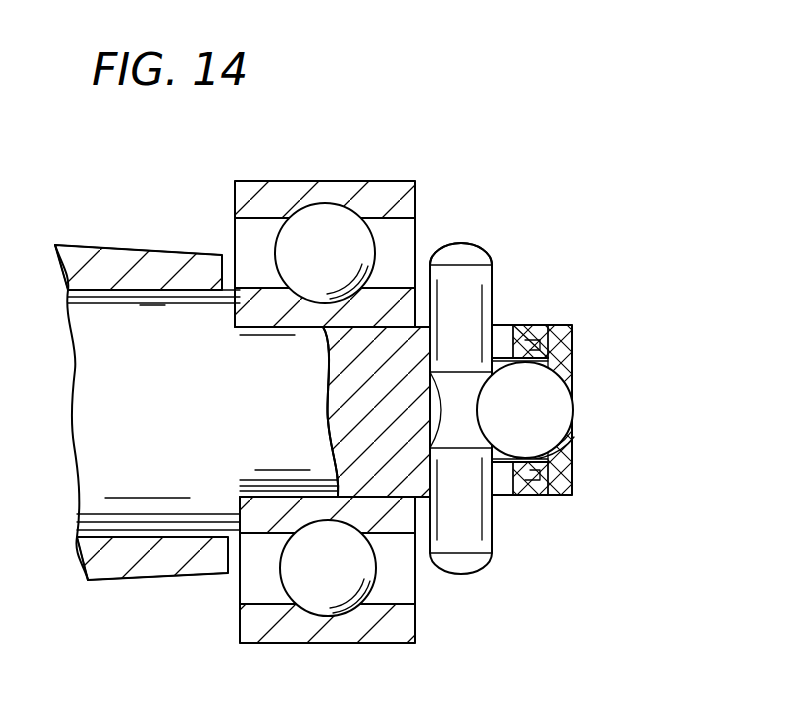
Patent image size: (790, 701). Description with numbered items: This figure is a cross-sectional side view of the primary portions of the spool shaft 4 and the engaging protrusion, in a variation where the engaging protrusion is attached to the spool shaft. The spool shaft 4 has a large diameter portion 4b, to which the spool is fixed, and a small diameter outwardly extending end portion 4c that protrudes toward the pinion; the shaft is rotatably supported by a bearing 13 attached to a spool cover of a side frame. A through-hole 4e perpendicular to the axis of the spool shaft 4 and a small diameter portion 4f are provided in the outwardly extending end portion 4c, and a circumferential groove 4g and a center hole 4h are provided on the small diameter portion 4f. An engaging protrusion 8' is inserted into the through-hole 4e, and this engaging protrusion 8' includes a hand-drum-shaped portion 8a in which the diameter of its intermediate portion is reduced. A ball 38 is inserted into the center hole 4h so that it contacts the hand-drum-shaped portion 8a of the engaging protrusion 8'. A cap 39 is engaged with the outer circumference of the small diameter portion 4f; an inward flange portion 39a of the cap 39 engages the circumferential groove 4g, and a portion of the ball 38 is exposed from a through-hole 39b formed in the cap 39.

The spool shaft 4 is at (115, 282).
The large diameter portion 4b is at (160, 305).
The outwardly extending end portion 4c is at (265, 345).
The through-hole 4e is at (460, 372).
The bearing 13 is at (320, 183).
The engaging protrusion 8' is at (503, 395).
The hand-drum-shaped portion 8a is at (487, 265).
The circumferential groove 4g is at (527, 348).
The small diameter portion 4f is at (555, 326).
The cap 39 is at (573, 338).
The inward flange portion 39a is at (545, 353).
The ball 38 is at (574, 410).
The through-hole 39b is at (568, 432).
The center hole 4h is at (562, 485).